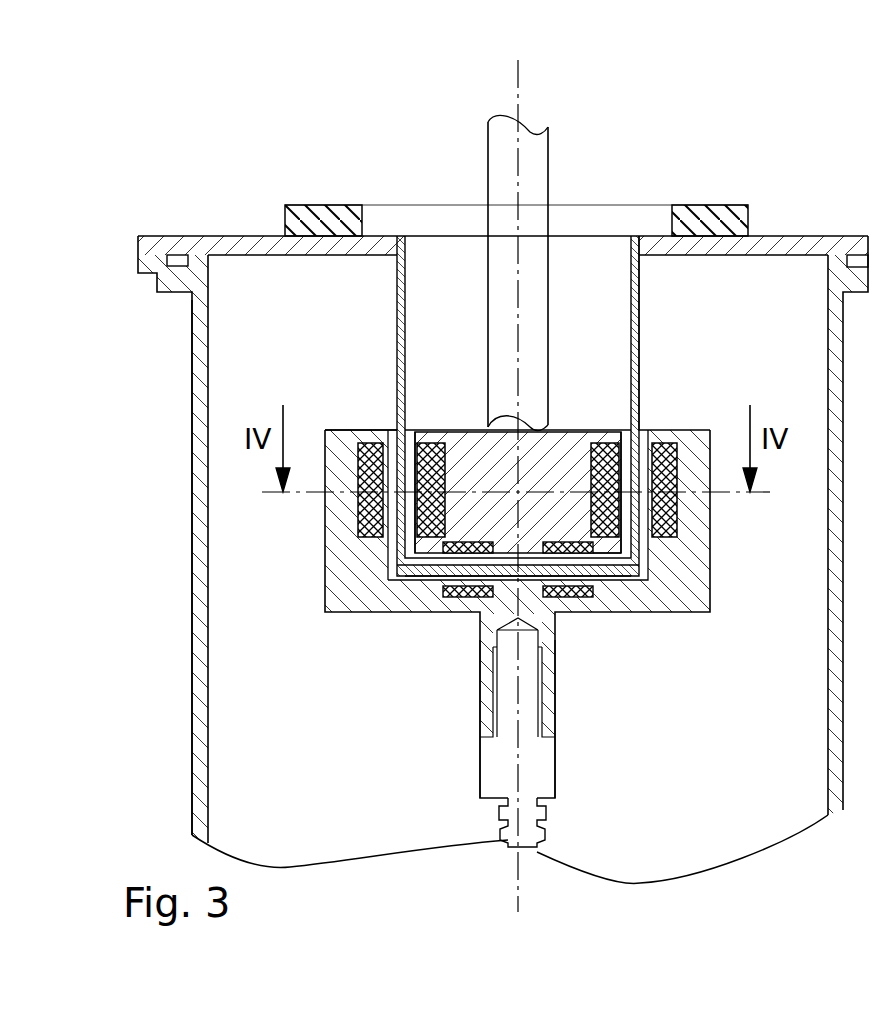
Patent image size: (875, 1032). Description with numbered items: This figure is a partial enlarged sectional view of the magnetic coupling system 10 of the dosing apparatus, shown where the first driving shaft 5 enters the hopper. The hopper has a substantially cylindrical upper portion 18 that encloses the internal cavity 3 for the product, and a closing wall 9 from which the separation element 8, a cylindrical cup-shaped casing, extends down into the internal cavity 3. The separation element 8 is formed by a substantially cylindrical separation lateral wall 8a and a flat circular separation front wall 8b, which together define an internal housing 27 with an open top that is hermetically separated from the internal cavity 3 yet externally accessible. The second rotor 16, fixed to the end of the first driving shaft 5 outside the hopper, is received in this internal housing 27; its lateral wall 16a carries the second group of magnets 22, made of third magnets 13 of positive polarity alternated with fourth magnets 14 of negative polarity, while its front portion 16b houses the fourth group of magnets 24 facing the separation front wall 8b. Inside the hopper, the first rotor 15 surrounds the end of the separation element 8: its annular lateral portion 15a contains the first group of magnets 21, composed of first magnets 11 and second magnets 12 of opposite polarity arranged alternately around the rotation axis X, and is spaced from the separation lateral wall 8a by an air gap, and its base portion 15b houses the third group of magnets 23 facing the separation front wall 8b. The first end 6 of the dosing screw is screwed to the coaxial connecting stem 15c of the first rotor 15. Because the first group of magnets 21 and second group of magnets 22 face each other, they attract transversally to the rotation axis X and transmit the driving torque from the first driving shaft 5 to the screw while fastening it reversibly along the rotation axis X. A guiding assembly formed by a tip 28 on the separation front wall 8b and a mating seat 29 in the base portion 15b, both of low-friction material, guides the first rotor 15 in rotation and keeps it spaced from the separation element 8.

The internal cavity 3 is at (328, 821).
The first driving shaft 5 is at (498, 168).
The first end 6 is at (538, 762).
The separation element 8 is at (630, 300).
The separation lateral wall 8a is at (640, 375).
The separation front wall 8b is at (415, 567).
The closing wall 9 is at (822, 247).
The magnetic coupling system 10 is at (263, 303).
The first magnets 11 is at (373, 503).
The second magnets 12 is at (675, 512).
The third magnets 13 is at (422, 443).
The fourth magnets 14 is at (603, 517).
The first rotor 15 is at (372, 578).
The annular lateral portion 15a is at (373, 548).
The base portion 15b is at (365, 593).
The connecting stem 15c is at (548, 707).
The second rotor 16 is at (543, 465).
The lateral wall 16a is at (640, 548).
The front portion 16b is at (622, 517).
The upper portion 18 is at (200, 412).
The first group of magnets 21 is at (348, 423).
The second group of magnets 22 is at (440, 410).
The third group of magnets 23 is at (463, 590).
The fourth group of magnets 24 is at (448, 553).
The internal housing 27 is at (606, 339).
The tip 28 is at (573, 557).
The seat 29 is at (512, 610).
The rotation axis X is at (517, 888).